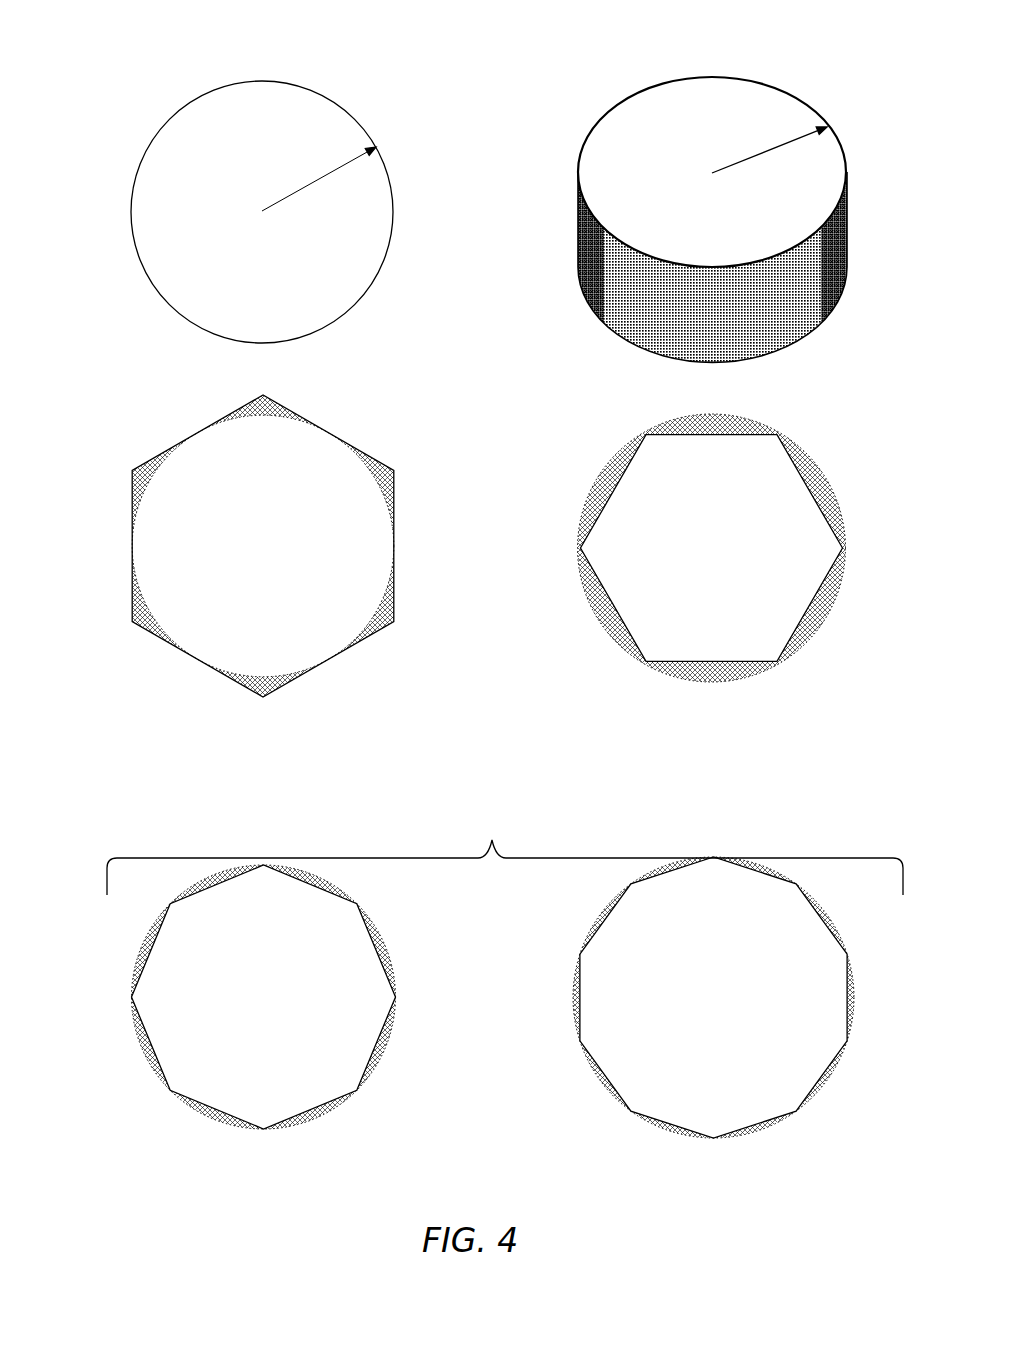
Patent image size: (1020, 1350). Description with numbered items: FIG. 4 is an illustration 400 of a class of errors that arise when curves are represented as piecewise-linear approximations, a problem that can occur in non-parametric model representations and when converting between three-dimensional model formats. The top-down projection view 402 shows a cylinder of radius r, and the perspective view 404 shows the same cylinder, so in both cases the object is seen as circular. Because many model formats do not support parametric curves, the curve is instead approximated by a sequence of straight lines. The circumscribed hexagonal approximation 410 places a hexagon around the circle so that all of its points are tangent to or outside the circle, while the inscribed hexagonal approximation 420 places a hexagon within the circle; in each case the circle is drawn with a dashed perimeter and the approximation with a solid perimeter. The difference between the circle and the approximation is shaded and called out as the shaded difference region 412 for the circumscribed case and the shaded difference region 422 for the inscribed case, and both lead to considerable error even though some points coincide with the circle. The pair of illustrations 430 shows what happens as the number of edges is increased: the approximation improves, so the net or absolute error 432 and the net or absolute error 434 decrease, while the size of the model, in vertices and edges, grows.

The shape comparison diagram 400 is at (84, 30).
The top-down projection view of a cylinder 402 is at (241, 59).
The perspective view of the cylinder 404 is at (678, 61).
The circumscribed hexagonal approximation 410 is at (190, 411).
The shaded difference region 412 is at (125, 616).
The inscribed hexagonal approximation 420 is at (875, 451).
The shaded difference region 422 is at (596, 624).
The pair of illustrations 430 is at (505, 975).
The net or absolute error 432 is at (138, 1059).
The net or absolute error 434 is at (618, 1118).